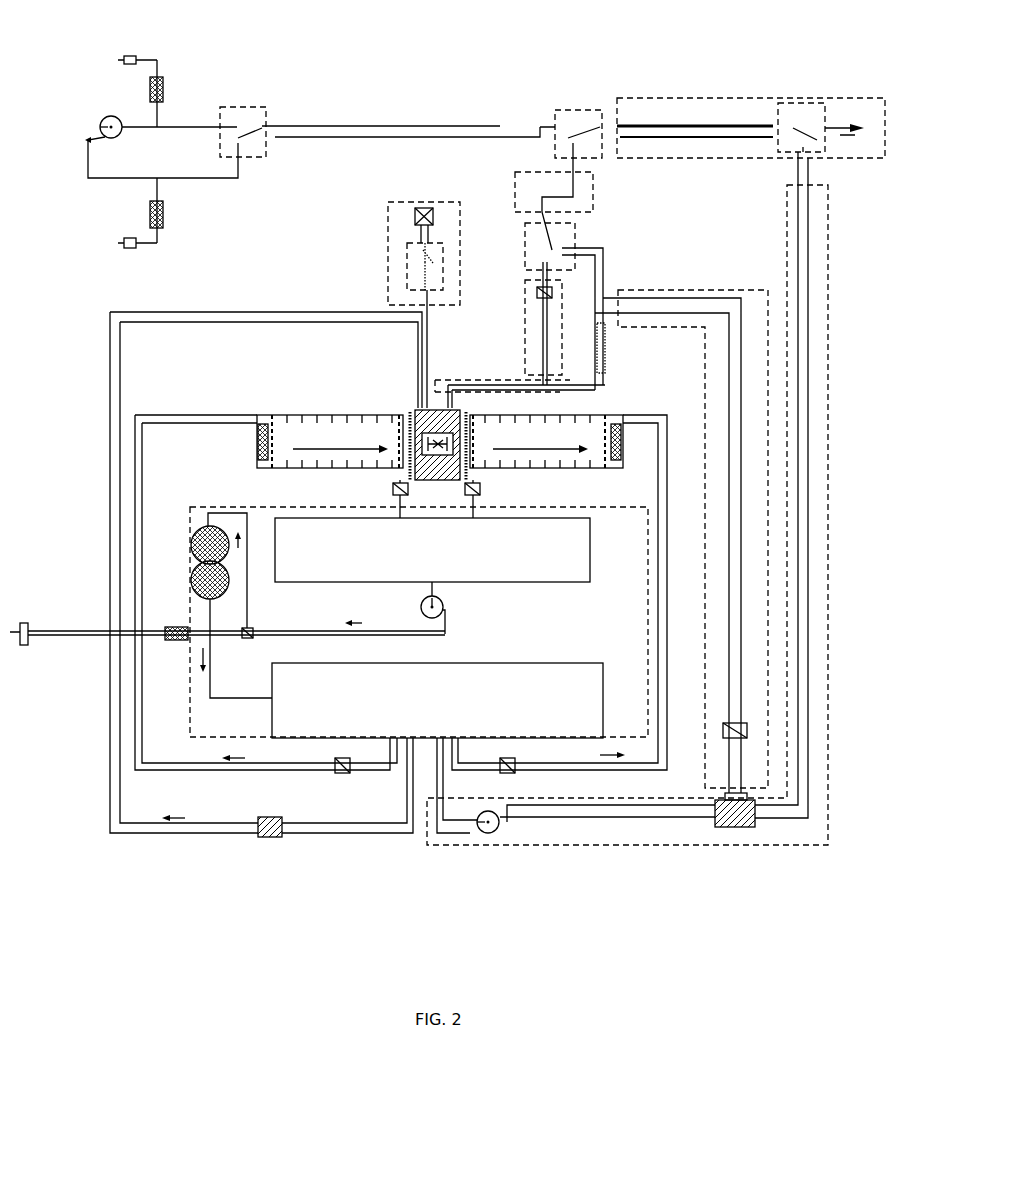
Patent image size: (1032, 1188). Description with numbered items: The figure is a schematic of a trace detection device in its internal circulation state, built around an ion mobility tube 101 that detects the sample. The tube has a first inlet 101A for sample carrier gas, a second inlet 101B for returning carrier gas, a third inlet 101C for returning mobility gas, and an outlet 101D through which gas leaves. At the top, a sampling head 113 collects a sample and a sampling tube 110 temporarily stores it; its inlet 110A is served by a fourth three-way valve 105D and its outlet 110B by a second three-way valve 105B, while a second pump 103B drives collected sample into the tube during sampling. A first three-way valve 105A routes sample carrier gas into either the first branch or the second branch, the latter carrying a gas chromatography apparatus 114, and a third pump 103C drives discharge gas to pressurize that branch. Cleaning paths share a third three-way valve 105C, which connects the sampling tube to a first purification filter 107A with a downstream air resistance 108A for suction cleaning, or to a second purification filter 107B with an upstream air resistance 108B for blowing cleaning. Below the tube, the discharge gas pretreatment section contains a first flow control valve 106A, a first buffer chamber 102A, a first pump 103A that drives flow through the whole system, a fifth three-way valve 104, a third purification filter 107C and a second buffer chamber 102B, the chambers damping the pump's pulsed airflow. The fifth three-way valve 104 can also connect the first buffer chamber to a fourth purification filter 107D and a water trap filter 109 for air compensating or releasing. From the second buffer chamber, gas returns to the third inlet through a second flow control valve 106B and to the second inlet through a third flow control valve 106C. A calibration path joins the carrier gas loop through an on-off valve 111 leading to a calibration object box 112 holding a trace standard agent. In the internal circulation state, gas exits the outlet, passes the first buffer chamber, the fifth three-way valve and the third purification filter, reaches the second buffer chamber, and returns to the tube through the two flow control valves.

The ion mobility tube 101 is at (398, 415).
The first inlet 101A is at (472, 425).
The second inlet 101B is at (420, 408).
The third inlet 101C is at (445, 431).
The outlet 101D is at (393, 491).
The first buffer chamber 102A is at (553, 582).
The second buffer chamber 102B is at (548, 663).
The first pump 103A is at (445, 610).
The second pump 103B is at (81, 115).
The third pump 103C is at (500, 833).
The fifth three-way valve 104 is at (245, 630).
The first three-way valve 105A is at (575, 233).
The second three-way valve 105B is at (600, 110).
The third three-way valve 105C is at (242, 108).
The fourth three-way valve 105D is at (792, 152).
The first flow control valve 106A is at (442, 494).
The second flow control valve 106B is at (335, 775).
The third flow control valve 106C is at (268, 835).
The first purification filter 107A is at (163, 222).
The second purification filter 107B is at (163, 87).
The third purification filter 107C is at (208, 527).
The fourth purification filter 107D is at (182, 642).
The air resistance 108A is at (137, 248).
The air resistance 108B is at (133, 52).
The water trap filter 109 is at (27, 645).
The sampling tube 110 is at (751, 115).
The inlet of the sampling tube 110A is at (695, 115).
The outlet of the sampling tube 110B is at (696, 121).
The on-off valve 111 is at (435, 265).
The calibration object box 112 is at (418, 221).
The sampling head 113 is at (858, 123).
The gas chromatography apparatus 114 is at (607, 353).